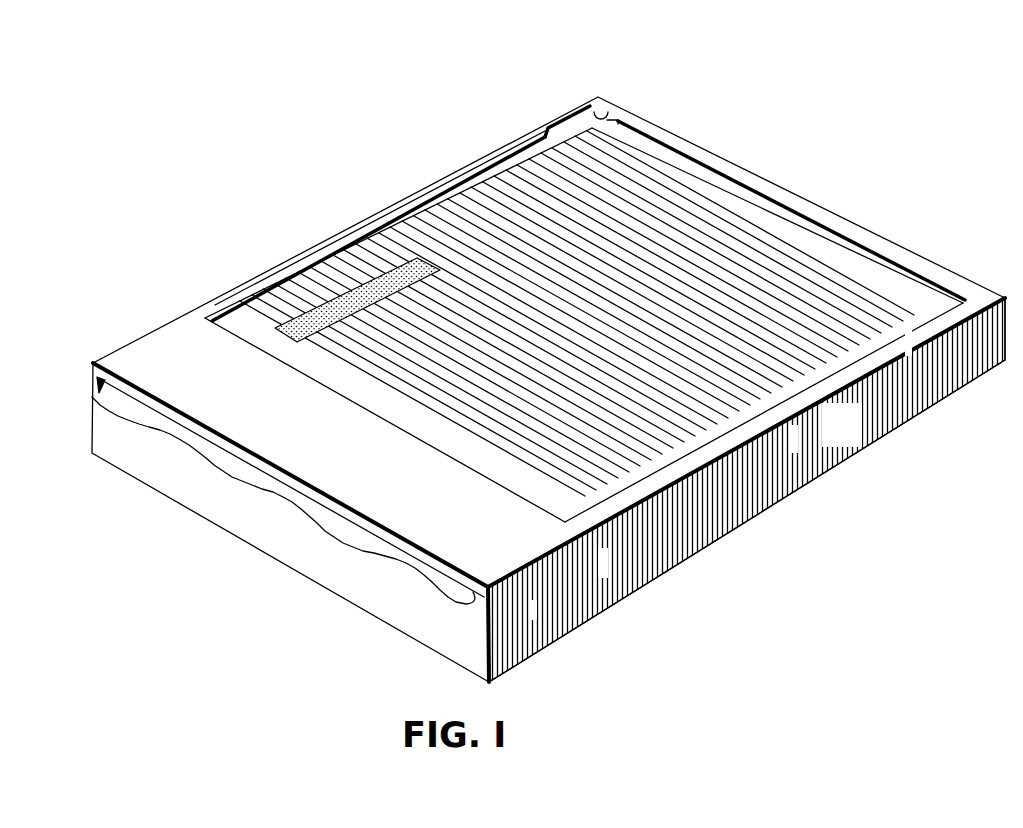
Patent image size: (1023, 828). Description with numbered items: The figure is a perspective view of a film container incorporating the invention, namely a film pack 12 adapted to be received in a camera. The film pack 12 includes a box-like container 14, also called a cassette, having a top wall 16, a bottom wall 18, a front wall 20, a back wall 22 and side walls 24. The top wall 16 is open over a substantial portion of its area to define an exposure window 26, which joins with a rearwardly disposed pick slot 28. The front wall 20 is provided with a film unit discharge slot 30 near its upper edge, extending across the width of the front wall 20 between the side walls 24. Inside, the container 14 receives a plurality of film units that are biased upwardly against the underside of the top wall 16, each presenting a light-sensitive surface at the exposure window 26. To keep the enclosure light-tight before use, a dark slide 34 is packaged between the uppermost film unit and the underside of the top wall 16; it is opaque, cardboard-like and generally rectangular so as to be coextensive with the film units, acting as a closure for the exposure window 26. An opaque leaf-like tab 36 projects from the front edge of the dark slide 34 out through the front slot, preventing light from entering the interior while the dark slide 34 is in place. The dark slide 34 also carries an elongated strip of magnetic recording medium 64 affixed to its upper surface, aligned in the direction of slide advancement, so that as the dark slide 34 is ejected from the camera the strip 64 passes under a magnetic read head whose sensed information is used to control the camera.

The film pack 12 is at (526, 377).
The container 14 is at (603, 624).
The top wall 16 is at (352, 468).
The bottom wall 18 is at (859, 451).
The front wall 20 is at (419, 613).
The back wall 22 is at (813, 202).
The side walls 24 is at (852, 429).
The exposure window 26 is at (436, 202).
The pick slot 28 is at (609, 114).
The film unit discharge slot 30 is at (97, 378).
The dark slide 34 is at (614, 325).
The tab 36 is at (366, 541).
The strip of magnetic recording medium 64 is at (386, 300).